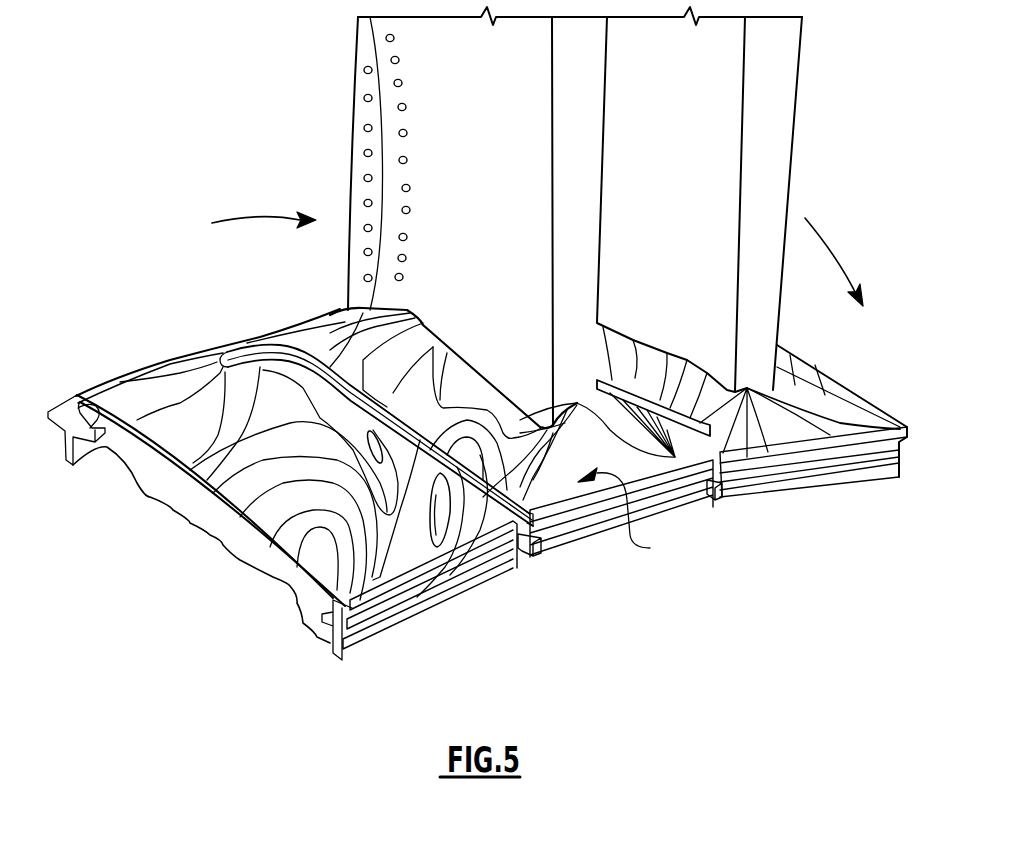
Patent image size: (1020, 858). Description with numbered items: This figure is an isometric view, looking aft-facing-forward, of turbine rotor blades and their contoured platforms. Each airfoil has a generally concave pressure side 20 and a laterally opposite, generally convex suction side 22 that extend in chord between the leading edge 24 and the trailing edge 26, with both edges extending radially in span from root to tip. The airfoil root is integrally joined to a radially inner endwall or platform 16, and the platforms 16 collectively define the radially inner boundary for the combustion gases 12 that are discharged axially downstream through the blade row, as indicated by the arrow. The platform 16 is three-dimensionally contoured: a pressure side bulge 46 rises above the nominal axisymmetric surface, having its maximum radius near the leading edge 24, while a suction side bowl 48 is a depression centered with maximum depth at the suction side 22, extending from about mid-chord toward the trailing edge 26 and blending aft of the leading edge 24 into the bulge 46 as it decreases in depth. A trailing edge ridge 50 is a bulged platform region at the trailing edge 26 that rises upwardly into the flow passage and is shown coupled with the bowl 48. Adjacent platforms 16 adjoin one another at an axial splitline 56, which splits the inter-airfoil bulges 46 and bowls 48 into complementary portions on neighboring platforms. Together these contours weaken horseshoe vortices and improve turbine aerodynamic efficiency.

The combustion gases 12 is at (260, 213).
The platform 16 is at (616, 446).
The pressure side 20 is at (483, 193).
The suction side 22 is at (780, 108).
The leading edge 24 is at (385, 112).
The trailing edge 26 is at (740, 170).
The pressure side bulge 46 is at (430, 317).
The suction side bowl 48 is at (435, 515).
The trailing edge ridge 50 is at (575, 433).
The axial splitline 56 is at (530, 537).